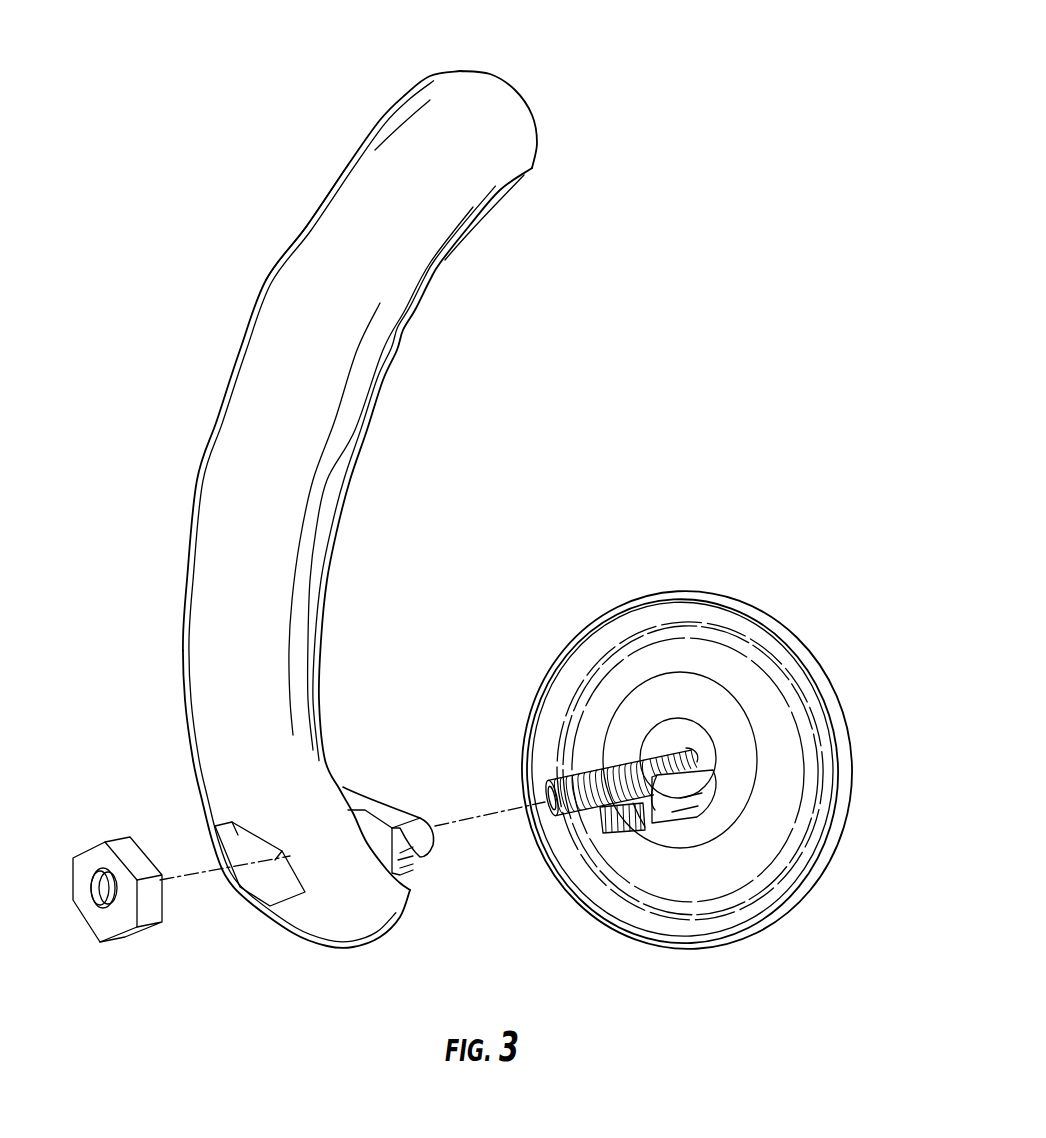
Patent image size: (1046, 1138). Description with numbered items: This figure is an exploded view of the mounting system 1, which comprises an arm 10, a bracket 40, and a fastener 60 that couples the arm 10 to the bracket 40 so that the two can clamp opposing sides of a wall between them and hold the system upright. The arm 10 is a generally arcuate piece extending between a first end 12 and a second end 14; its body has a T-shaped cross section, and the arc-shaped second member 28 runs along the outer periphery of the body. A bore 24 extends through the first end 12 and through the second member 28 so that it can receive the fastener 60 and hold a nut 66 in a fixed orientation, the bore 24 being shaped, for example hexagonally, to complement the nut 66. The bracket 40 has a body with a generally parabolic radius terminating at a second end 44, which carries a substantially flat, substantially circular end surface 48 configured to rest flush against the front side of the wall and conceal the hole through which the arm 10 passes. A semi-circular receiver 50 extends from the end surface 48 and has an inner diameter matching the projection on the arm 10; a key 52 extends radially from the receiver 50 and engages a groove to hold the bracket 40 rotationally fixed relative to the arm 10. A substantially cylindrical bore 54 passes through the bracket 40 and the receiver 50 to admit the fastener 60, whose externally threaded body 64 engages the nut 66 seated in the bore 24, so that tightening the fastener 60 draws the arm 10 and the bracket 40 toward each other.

The mounting system 1 is at (172, 225).
The arm 10 is at (392, 480).
The first end 12 is at (355, 785).
The second end 14 is at (516, 92).
The bore 24 is at (235, 826).
The second member 28 is at (320, 252).
The bracket 40 is at (722, 733).
The second end 44 is at (682, 771).
The end surface 48 is at (732, 612).
The receiver 50 is at (677, 795).
The key 52 is at (617, 808).
The bore 54 is at (692, 752).
The fastener 60 is at (594, 827).
The threaded body 64 is at (566, 806).
The nut 66 is at (130, 855).